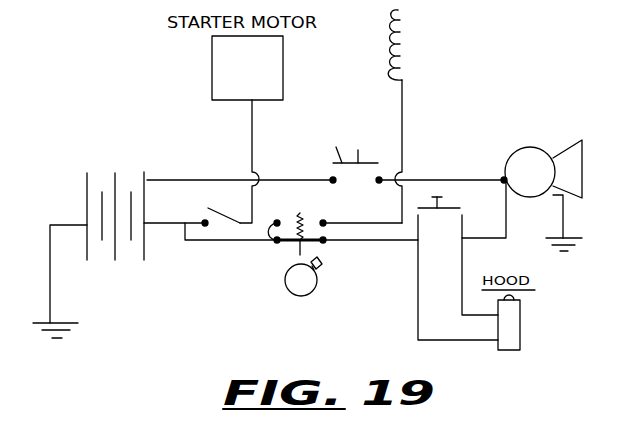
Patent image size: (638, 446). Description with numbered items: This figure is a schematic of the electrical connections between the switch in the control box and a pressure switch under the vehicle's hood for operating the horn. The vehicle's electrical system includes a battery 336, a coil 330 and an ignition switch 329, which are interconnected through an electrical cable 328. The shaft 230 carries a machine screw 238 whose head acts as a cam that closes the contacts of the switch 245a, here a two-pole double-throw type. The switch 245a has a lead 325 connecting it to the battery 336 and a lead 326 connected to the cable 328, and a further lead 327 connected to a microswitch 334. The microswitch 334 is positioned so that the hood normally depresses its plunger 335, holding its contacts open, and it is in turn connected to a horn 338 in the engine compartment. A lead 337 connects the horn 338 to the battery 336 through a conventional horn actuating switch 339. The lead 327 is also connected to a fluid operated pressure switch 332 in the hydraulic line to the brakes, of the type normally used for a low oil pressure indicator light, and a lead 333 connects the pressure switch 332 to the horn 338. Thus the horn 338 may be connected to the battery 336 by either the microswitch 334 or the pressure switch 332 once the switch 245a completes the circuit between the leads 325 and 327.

The battery 336 is at (103, 180).
The lead 337 is at (204, 178).
The electrical cable 328 is at (157, 223).
The ignition switch 329 is at (231, 199).
The lead 325 is at (203, 242).
The switch 245a is at (288, 244).
The machine screw 238 is at (334, 274).
The shaft 230 is at (302, 297).
The lead 326 is at (374, 221).
The lead 327 is at (398, 241).
The horn actuating switch 339 is at (348, 145).
The coil 330 is at (406, 61).
The horn 338 is at (521, 148).
The fluid operated pressure switch 332 is at (457, 207).
The lead 333 is at (462, 259).
The plunger 335 is at (522, 338).
The microswitch 334 is at (506, 352).